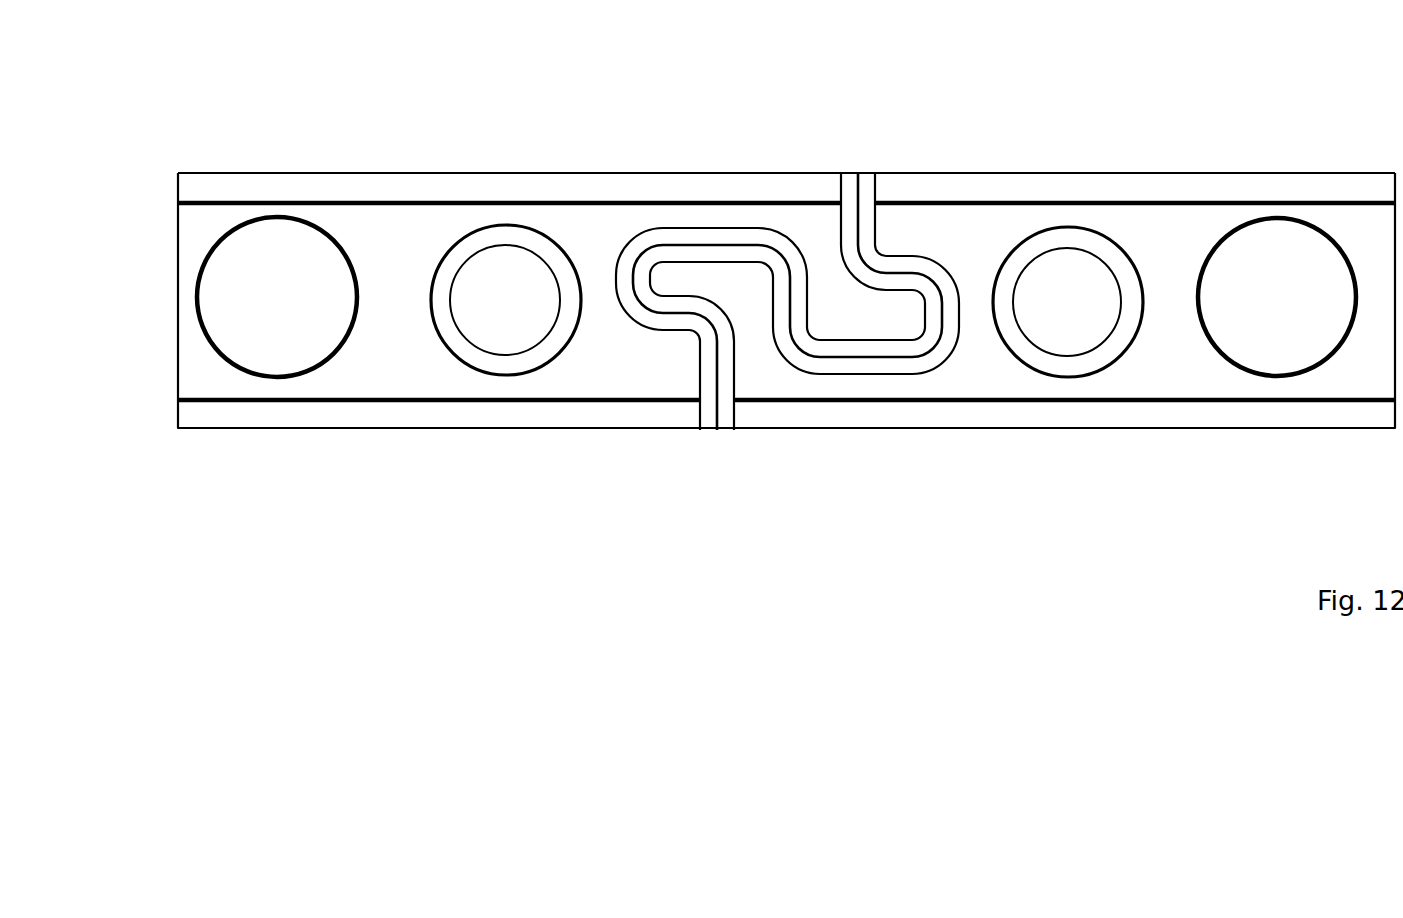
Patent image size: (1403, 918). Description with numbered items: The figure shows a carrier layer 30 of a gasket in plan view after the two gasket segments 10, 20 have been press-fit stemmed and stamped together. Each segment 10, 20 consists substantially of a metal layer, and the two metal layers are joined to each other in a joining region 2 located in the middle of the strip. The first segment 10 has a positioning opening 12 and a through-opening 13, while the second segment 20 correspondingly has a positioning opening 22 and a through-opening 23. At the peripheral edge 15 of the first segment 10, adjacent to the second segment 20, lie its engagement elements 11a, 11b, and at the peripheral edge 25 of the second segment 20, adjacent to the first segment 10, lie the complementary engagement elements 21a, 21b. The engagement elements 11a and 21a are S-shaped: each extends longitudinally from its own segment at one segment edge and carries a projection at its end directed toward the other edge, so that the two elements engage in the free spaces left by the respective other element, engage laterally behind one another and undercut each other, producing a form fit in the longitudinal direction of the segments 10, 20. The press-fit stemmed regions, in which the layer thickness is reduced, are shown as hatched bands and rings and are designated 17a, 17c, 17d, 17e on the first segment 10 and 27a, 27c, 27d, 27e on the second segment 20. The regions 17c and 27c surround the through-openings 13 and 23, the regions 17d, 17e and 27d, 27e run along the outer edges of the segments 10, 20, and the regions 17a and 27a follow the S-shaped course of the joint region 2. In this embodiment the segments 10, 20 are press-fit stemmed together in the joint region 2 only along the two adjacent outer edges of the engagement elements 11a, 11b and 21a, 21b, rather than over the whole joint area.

The joining region 2 is at (745, 412).
The first segment 10 is at (405, 368).
The engagement element 11a is at (852, 312).
The engagement element 11b is at (660, 383).
The positioning opening 12 is at (278, 280).
The through-opening 13 is at (492, 277).
The peripheral edge 15 is at (385, 172).
The press-fit stemmed region 17a is at (840, 253).
The press-fit stemmed region 17c is at (505, 225).
The press-fit stemmed region 17d is at (368, 400).
The press-fit stemmed region 17e is at (295, 203).
The second segment 20 is at (1207, 375).
The engagement element 21a is at (688, 278).
The engagement element 21b is at (907, 220).
The positioning opening 22 is at (1277, 288).
The through-opening 23 is at (1077, 280).
The peripheral edge 25 is at (997, 172).
The press-fit stemmed region 27a is at (728, 348).
The press-fit stemmed region 27c is at (1098, 367).
The press-fit stemmed region 27d is at (1009, 403).
The press-fit stemmed region 27e is at (1099, 203).
The carrier layer 30 is at (305, 478).